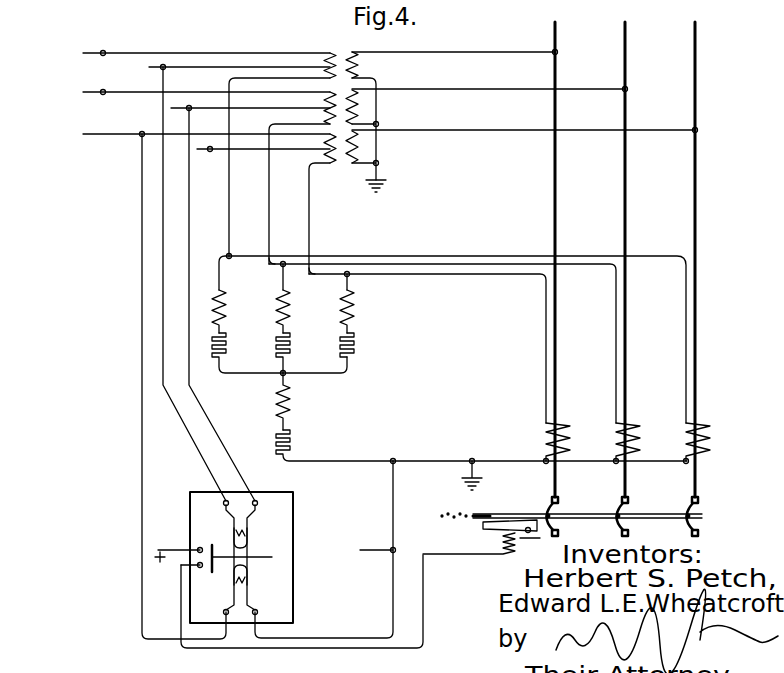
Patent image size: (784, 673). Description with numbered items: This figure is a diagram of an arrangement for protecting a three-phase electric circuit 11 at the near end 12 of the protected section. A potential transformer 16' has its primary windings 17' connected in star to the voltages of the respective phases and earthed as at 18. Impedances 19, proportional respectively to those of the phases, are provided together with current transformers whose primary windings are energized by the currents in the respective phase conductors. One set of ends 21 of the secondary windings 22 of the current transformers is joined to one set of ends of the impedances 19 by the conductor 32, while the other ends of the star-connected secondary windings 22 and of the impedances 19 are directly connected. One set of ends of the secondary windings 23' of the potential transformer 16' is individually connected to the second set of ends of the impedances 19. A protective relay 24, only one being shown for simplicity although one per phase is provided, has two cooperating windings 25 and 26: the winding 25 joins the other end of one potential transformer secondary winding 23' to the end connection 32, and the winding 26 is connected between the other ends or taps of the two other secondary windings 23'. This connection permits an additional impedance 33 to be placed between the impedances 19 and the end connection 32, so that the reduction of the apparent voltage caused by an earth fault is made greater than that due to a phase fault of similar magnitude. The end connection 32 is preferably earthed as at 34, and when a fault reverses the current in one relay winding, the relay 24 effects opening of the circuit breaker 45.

The three-phase electric circuit 11 is at (713, 185).
The near end 12 is at (525, 84).
The potential transformer 16' is at (364, 108).
The primary windings 17' is at (375, 107).
The earth 18 is at (383, 190).
The impedances 19 is at (339, 341).
The ends of the secondary windings 21 is at (687, 463).
The secondary windings 22 is at (688, 436).
The secondary windings 23' is at (342, 121).
The protective relay 24 is at (224, 557).
The winding 25 is at (248, 580).
The winding 26 is at (248, 537).
The end connection 32 is at (421, 461).
The additional impedance 33 is at (290, 442).
The earth 34 is at (462, 490).
The circuit breaker 45 is at (702, 515).